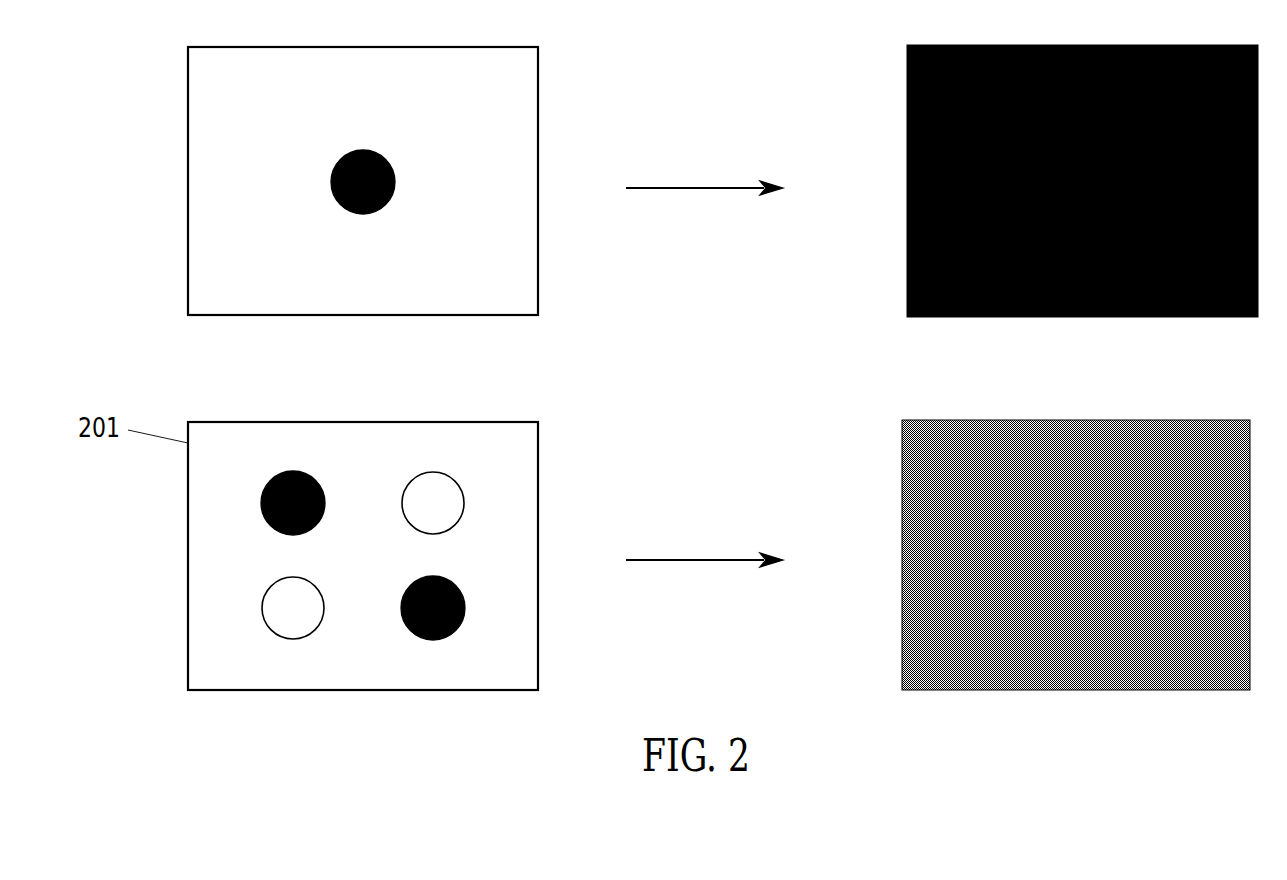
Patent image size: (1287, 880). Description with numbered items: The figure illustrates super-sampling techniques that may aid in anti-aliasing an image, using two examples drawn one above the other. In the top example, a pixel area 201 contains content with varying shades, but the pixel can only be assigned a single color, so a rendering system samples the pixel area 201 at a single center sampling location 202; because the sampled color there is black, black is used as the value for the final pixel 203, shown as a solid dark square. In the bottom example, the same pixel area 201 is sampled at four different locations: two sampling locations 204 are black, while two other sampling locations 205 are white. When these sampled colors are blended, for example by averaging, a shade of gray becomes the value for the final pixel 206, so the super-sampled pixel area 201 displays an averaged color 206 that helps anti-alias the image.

The pixel area 201 is at (188, 190).
The center sampling location 202 is at (332, 182).
The final pixel 203 is at (907, 190).
The sampling locations 204 is at (255, 505).
The bright pixel 205 is at (470, 505).
The final pixel 206 is at (902, 555).